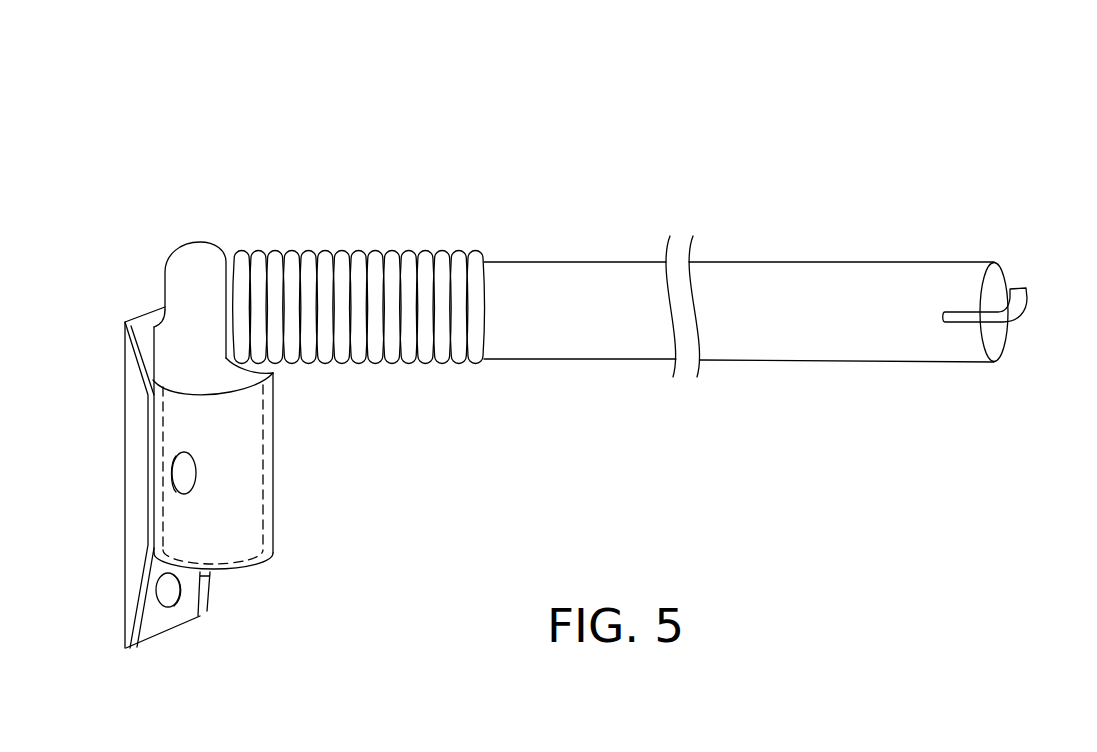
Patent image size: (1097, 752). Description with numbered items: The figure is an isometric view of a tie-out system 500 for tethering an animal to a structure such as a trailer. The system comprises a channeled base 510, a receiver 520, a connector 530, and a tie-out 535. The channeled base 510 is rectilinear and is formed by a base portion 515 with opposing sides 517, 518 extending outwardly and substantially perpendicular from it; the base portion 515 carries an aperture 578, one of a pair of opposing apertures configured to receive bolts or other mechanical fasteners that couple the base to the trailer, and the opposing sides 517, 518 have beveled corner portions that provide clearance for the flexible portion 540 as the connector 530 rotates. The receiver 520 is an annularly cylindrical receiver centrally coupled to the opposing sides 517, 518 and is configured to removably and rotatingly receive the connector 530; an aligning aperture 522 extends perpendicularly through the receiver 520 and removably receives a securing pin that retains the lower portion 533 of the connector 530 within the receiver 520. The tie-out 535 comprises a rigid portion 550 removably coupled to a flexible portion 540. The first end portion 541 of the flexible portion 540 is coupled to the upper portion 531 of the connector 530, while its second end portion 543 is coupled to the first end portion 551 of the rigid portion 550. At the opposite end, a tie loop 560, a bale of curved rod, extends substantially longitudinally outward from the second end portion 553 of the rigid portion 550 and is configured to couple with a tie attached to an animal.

The tie-out system 500 is at (110, 191).
The channeled base 510 is at (113, 403).
The base portion 515 is at (190, 617).
The opposing side 517 is at (130, 535).
The opposing side 518 is at (212, 577).
The receiver 520 is at (273, 443).
The aligning aperture 522 is at (180, 482).
The connector 530 is at (302, 394).
The upper portion 531 is at (196, 244).
The lower portion 533 is at (273, 515).
The tie-out 535 is at (640, 110).
The flexible portion 540 is at (370, 242).
The first end portion 541 is at (275, 238).
The second end portion 543 is at (472, 238).
The rigid portion 550 is at (778, 273).
The first end portion 551 is at (508, 382).
The second end portion 553 is at (968, 246).
The tie loop 560 is at (1027, 312).
The aperture 578 is at (168, 594).